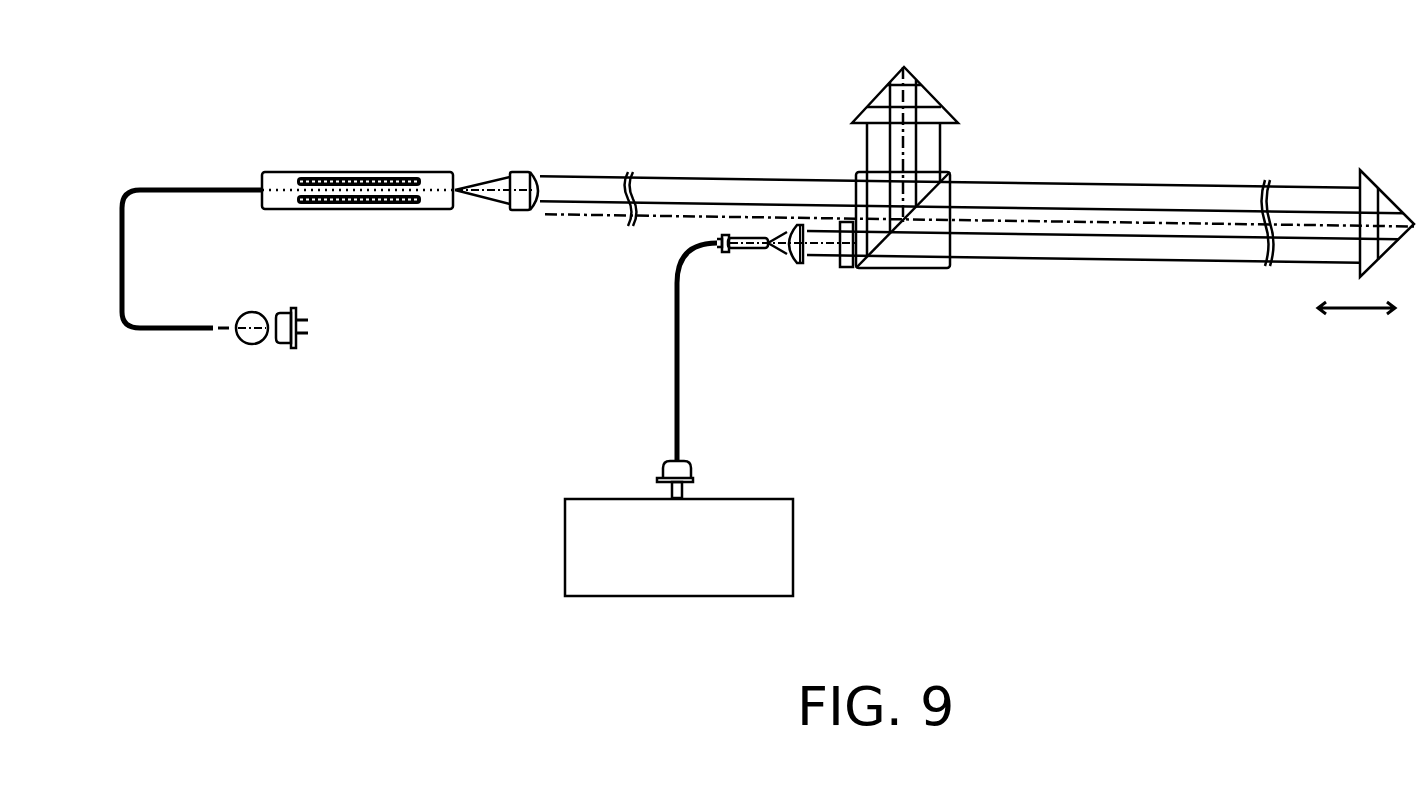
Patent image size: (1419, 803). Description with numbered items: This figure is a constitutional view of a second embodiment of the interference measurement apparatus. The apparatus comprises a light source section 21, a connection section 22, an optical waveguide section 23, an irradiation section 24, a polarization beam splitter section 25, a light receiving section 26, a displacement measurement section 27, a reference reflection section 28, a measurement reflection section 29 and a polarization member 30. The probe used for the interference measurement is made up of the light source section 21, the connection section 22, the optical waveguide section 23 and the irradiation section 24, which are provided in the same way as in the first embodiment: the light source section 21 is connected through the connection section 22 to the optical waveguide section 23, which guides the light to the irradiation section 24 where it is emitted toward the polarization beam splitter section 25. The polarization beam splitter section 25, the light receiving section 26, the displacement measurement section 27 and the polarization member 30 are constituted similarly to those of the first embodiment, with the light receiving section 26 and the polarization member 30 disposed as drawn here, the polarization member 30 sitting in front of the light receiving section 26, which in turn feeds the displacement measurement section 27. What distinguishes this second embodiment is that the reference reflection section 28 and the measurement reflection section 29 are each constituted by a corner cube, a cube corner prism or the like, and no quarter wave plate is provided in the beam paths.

The light source section 21 is at (281, 345).
The connection section 22 is at (167, 270).
The optical waveguide section 23 is at (288, 172).
The irradiation section 24 is at (525, 149).
The polarization beam splitter section 25 is at (950, 176).
The light receiving section 26 is at (735, 362).
The displacement measurement section 27 is at (793, 518).
The reference reflection section 28 is at (926, 88).
The measurement reflection section 29 is at (1358, 170).
The polarization member 30 is at (846, 270).